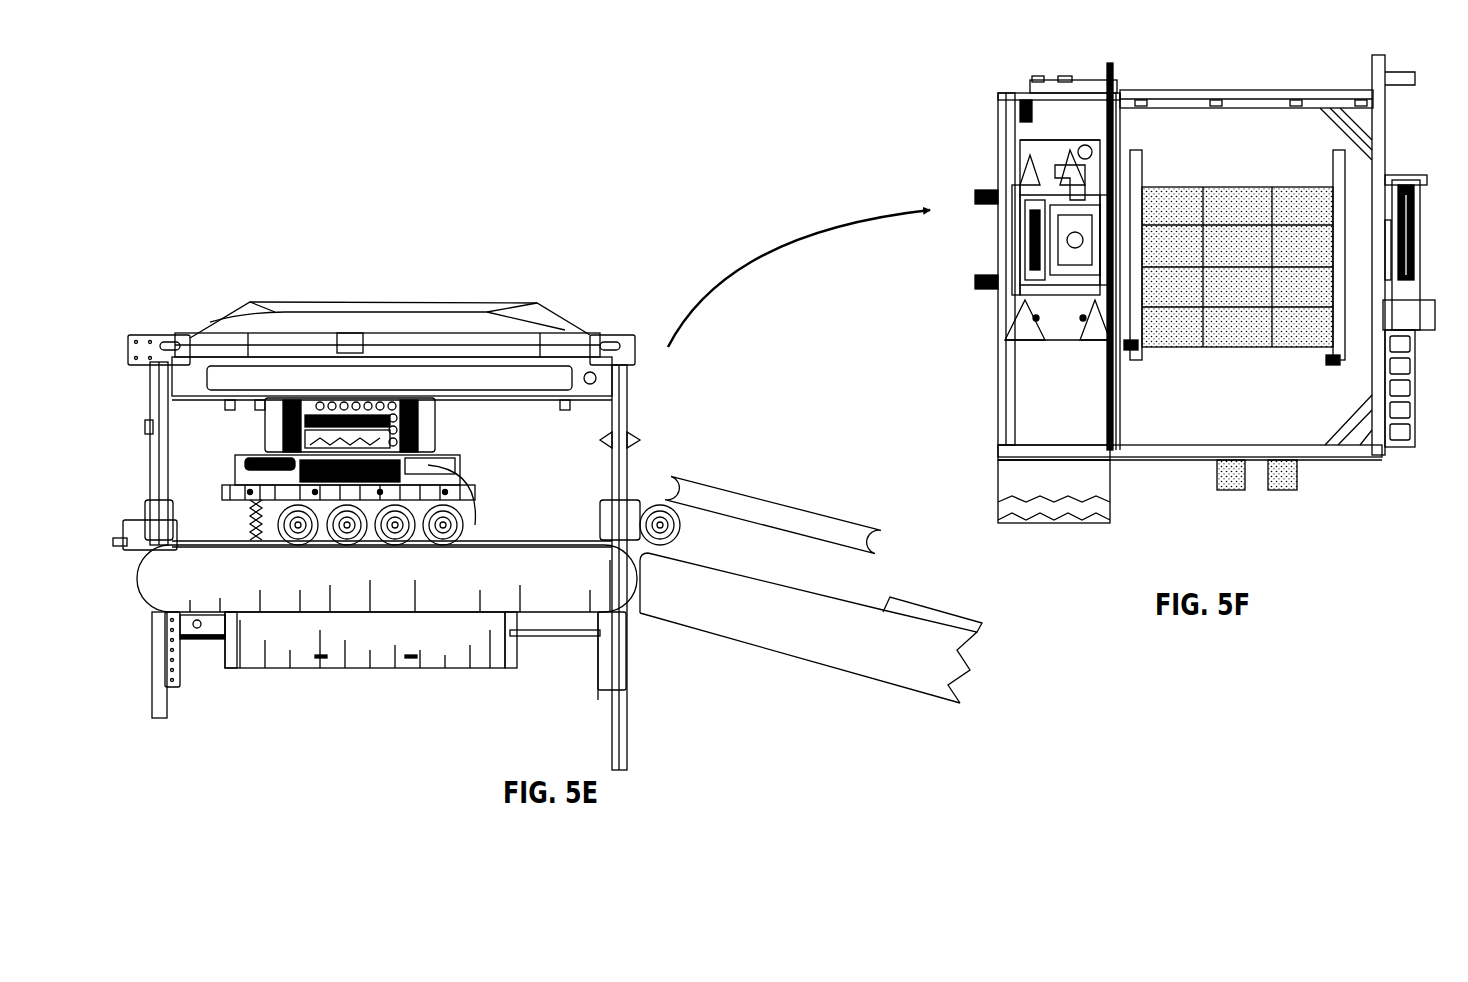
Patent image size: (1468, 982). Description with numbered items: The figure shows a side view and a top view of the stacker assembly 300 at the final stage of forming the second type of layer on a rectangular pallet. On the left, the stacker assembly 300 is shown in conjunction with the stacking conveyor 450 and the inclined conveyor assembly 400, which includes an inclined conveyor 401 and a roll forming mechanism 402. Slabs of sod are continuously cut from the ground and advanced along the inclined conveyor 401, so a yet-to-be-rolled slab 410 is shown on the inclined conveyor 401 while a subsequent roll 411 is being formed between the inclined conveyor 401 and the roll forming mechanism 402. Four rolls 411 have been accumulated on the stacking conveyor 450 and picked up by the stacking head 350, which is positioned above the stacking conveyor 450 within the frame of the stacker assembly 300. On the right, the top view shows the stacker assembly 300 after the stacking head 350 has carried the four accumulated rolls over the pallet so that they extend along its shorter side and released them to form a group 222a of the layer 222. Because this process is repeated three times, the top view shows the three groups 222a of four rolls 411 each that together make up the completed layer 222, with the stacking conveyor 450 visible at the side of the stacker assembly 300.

In FIG. 5E, the stacker assembly 300 is at (196, 259).
In FIG. 5F, the stacker assembly 300 is at (975, 51).
In FIG. 5E, the stacking head 350 is at (222, 492).
In FIG. 5E, the rolls 411 is at (296, 540).
In FIG. 5E, the inclined conveyor assembly 400 is at (992, 602).
In FIG. 5E, the inclined conveyor 401 is at (807, 644).
In FIG. 5F, the inclined conveyor 401 is at (1092, 508).
In FIG. 5E, the roll forming mechanism 402 is at (874, 549).
In FIG. 5F, the roll forming mechanism 402 is at (1092, 480).
In FIG. 5E, the slab 410 is at (983, 633).
In FIG. 5E, the stacking conveyor 450 is at (247, 610).
In FIG. 5F, the stacking conveyor 450 is at (1018, 400).
In FIG. 5F, the layer 222 is at (1236, 350).
In FIG. 5F, the groups 222a is at (1175, 186).